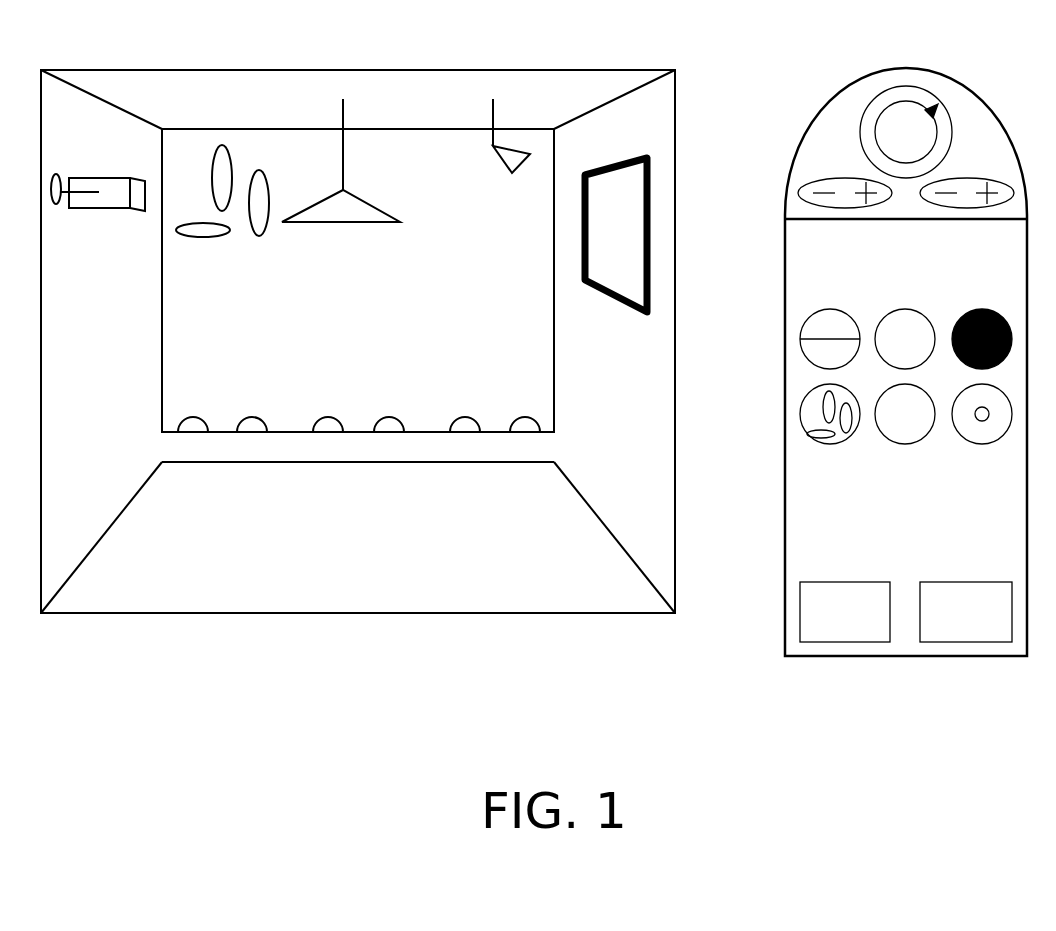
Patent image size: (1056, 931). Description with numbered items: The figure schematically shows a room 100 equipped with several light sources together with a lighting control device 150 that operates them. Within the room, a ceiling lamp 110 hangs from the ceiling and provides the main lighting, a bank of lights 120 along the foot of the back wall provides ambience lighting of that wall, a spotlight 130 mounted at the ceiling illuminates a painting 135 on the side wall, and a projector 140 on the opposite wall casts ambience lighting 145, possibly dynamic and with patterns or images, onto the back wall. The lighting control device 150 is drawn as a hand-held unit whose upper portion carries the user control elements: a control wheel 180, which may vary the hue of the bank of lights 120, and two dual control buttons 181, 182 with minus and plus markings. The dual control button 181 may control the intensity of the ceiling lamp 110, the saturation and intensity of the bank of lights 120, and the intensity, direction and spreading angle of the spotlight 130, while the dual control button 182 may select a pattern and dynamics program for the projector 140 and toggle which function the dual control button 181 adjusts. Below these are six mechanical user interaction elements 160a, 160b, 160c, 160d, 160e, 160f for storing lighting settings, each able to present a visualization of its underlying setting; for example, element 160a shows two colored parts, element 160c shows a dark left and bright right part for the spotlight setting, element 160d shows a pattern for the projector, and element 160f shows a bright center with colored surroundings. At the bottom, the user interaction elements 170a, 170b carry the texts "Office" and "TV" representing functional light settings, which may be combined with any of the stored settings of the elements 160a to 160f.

The room 100 is at (427, 621).
The ceiling lamp 110 is at (400, 222).
The bank of lights 120 is at (193, 415).
The spotlight 130 is at (505, 167).
The painting 135 is at (632, 308).
The projector 140 is at (120, 212).
The ambience lighting 145 is at (222, 247).
The lighting control device 150 is at (783, 660).
The user interaction element 160a is at (828, 310).
The user interaction element 160b is at (905, 310).
The user interaction element 160c is at (978, 310).
The user interaction element 160d is at (832, 445).
The user interaction element 160e is at (907, 445).
The user interaction element 160f is at (983, 445).
The user interaction element 170a is at (863, 580).
The user interaction element 170b is at (987, 580).
The control wheel 180 is at (902, 95).
The dual control button 181 is at (840, 178).
The dual control button 182 is at (970, 178).